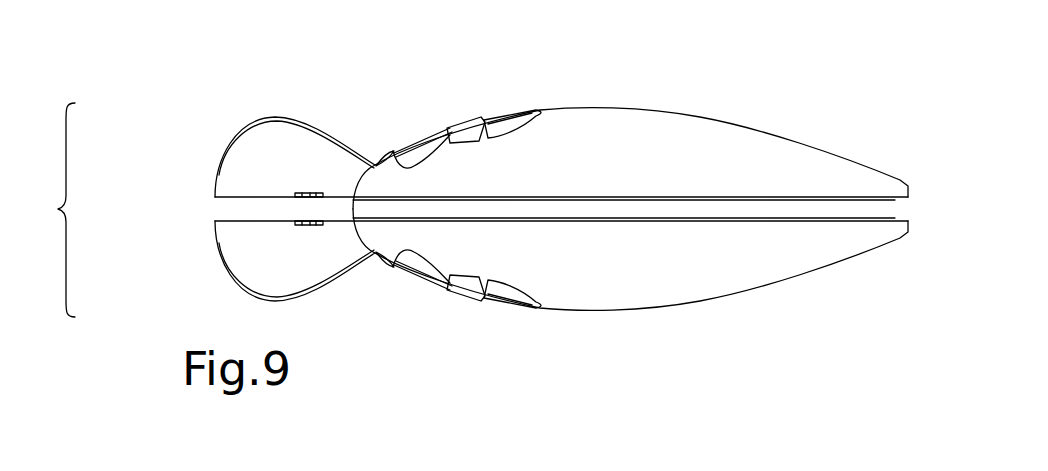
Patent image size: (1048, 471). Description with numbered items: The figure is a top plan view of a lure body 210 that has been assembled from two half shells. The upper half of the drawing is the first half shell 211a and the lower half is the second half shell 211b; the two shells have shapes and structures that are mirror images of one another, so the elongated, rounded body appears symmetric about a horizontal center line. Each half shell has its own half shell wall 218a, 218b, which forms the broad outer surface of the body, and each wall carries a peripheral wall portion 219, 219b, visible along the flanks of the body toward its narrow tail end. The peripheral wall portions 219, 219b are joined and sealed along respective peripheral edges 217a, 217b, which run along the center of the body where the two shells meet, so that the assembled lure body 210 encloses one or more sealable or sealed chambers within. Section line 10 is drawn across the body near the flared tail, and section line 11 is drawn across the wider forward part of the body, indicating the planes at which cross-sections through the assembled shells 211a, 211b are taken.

The section line 10- 10 is at (200, 211).
The section line 11- 11 is at (617, 107).
The lure body 210 is at (428, 88).
The first half shell 211a is at (845, 108).
The second half shell 211b is at (840, 290).
The peripheral edge 217a is at (697, 222).
The peripheral edge 217b is at (647, 217).
The half shell wall 218a is at (613, 145).
The half shell wall 218b is at (633, 288).
The peripheral wall portion 219 is at (535, 196).
The peripheral wall portion 219b is at (558, 224).